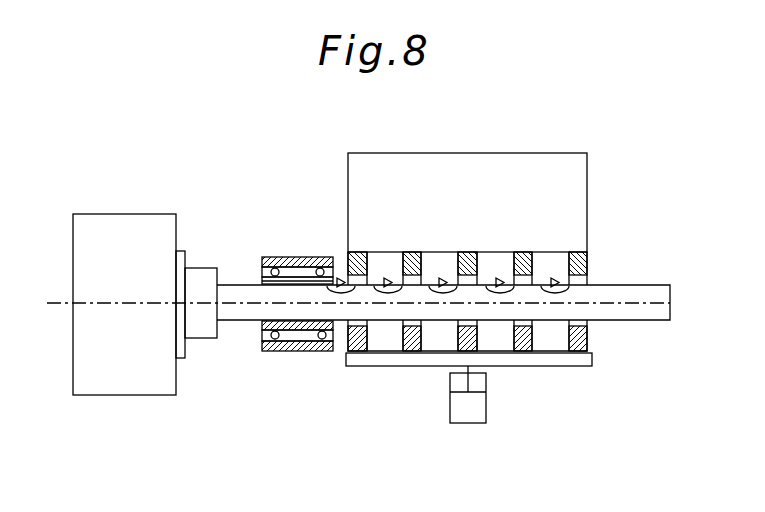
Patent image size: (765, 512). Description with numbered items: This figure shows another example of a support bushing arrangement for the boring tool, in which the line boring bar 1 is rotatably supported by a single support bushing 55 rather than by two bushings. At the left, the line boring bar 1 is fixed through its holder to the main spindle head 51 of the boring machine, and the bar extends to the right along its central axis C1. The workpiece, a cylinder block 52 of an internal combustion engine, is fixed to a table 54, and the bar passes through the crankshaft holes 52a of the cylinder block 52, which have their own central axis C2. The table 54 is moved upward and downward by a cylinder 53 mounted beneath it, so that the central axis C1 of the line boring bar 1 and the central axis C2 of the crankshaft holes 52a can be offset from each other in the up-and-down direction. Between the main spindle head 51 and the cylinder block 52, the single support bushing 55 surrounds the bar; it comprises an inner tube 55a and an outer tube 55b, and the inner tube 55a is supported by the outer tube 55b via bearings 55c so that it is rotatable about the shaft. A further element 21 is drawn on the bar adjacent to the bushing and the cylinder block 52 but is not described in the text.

The line boring bar 1 is at (250, 273).
The roller/seal element 21 is at (339, 279).
The main spindle head 51 is at (125, 237).
The cylinder block 52 is at (503, 234).
The crankshaft holes 52a is at (384, 278).
The cylinder 53 is at (477, 407).
The table 54 is at (582, 360).
The support bushing 55 is at (264, 340).
The inner tube 55a is at (258, 327).
The outer tube 55b is at (273, 345).
The bearings 55c is at (283, 256).
The central axis of the line boring bar C1 is at (229, 303).
The central axis of crankshaft holes C2 is at (623, 298).